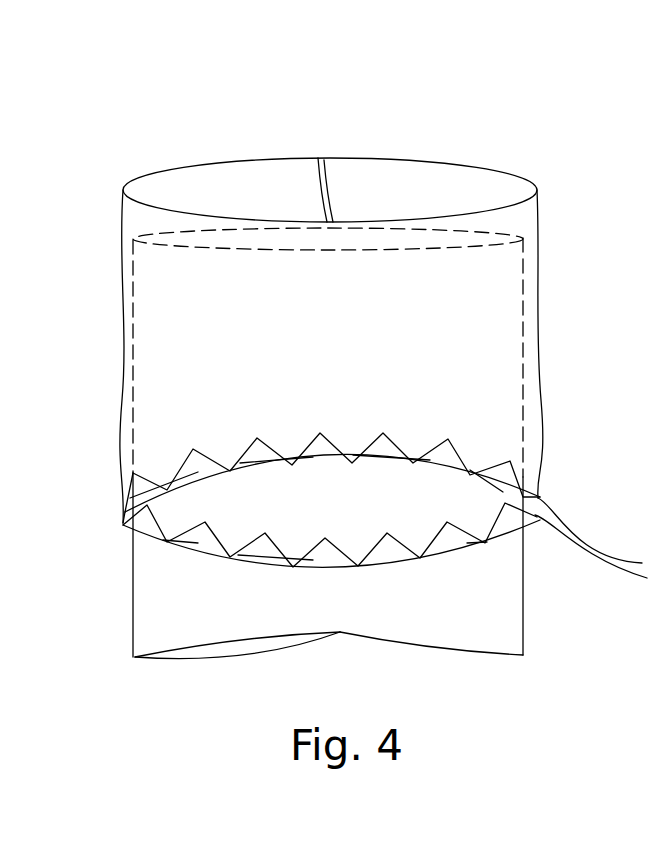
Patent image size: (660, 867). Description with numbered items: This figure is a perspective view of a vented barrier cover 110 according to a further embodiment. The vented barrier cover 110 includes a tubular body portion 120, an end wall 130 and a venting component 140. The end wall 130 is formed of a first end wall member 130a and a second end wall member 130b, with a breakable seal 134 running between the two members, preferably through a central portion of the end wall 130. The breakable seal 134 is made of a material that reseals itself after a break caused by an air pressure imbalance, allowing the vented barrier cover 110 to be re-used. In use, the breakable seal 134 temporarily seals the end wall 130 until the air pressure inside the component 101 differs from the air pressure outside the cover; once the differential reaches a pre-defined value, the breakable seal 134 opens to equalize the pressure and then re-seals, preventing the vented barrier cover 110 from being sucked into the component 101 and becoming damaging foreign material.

The vented barrier cover 110 is at (122, 158).
The end wall 130 is at (432, 172).
The first end wall member 130a is at (213, 182).
The second end wall member 130b is at (497, 188).
The tubular body portion 120 is at (122, 365).
The venting component 140 is at (318, 158).
The breakable seal 134 is at (334, 182).
The component 101 is at (133, 587).